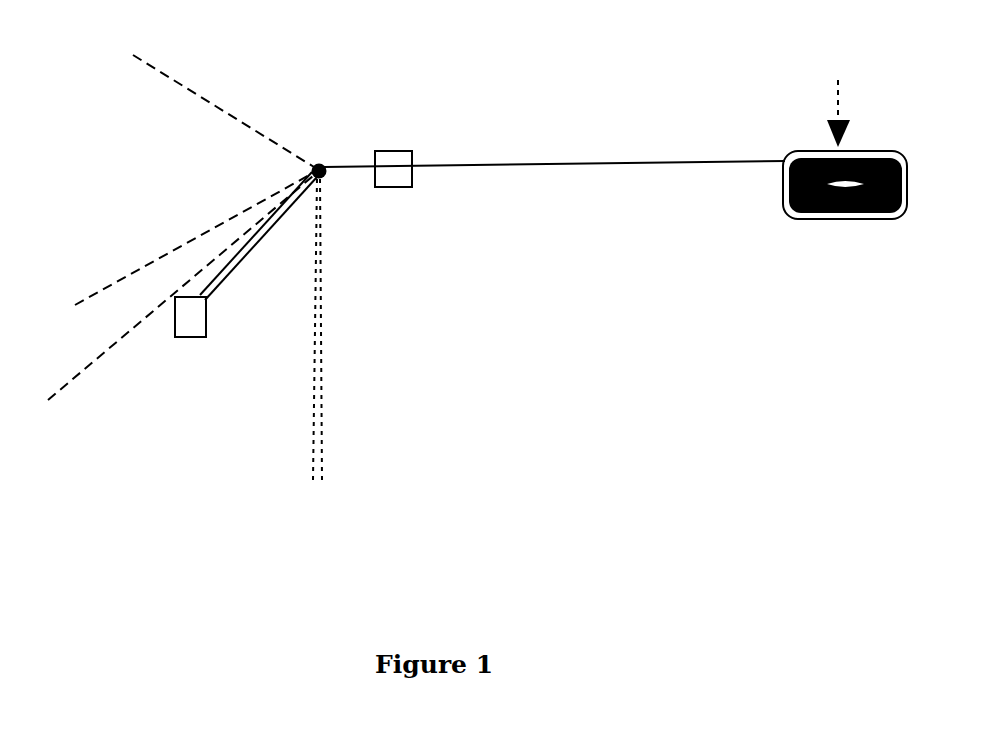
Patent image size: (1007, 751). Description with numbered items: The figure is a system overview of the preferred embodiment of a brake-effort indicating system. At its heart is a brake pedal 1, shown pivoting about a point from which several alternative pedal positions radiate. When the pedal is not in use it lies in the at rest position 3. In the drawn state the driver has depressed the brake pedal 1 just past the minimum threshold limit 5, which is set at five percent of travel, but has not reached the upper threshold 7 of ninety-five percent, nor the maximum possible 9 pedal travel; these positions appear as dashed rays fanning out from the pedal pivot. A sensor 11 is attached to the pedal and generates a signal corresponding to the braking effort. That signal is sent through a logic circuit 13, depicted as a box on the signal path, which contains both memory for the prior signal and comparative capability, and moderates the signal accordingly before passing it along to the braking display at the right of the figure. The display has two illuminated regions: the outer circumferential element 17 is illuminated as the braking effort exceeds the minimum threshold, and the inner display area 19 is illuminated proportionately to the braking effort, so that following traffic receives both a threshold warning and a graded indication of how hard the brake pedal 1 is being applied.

The brake pedal 1 is at (196, 338).
The at rest position 3 is at (177, 254).
The minimum threshold limit 5 is at (169, 308).
The upper threshold 7 is at (300, 330).
The maximum possible 9 is at (330, 355).
The sensor 11 is at (209, 95).
The logic circuit 13 is at (399, 150).
The outer circumferential element 17 is at (844, 230).
The inner display area 19 is at (837, 97).